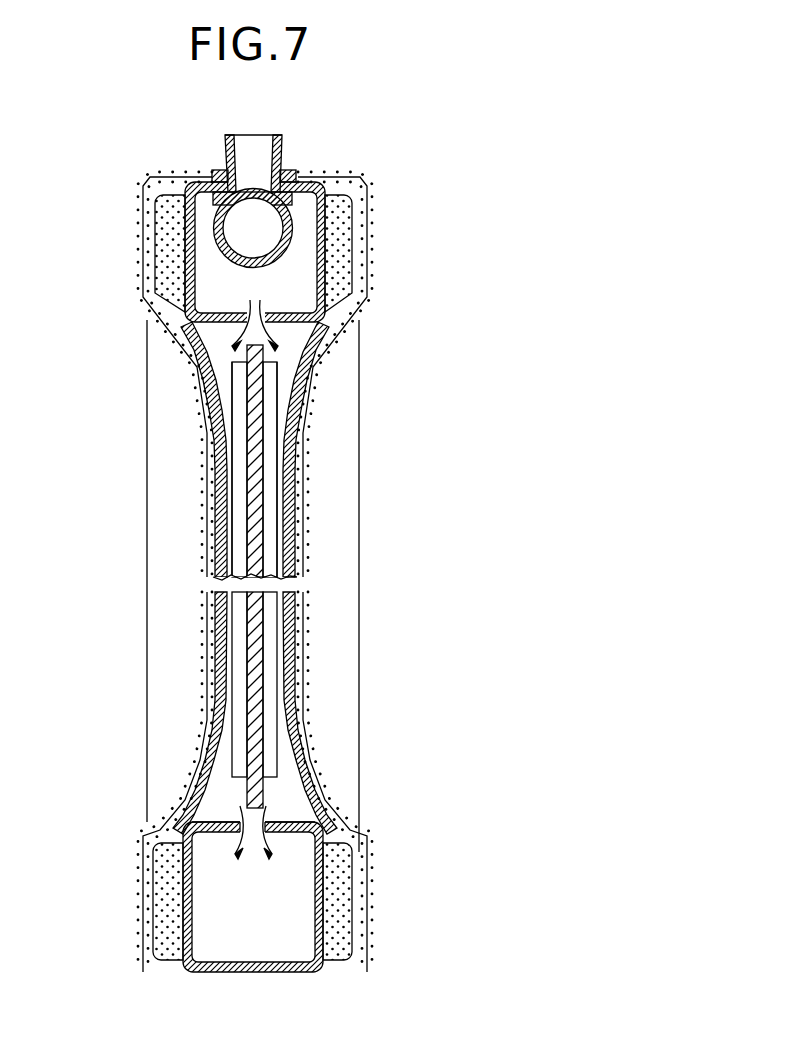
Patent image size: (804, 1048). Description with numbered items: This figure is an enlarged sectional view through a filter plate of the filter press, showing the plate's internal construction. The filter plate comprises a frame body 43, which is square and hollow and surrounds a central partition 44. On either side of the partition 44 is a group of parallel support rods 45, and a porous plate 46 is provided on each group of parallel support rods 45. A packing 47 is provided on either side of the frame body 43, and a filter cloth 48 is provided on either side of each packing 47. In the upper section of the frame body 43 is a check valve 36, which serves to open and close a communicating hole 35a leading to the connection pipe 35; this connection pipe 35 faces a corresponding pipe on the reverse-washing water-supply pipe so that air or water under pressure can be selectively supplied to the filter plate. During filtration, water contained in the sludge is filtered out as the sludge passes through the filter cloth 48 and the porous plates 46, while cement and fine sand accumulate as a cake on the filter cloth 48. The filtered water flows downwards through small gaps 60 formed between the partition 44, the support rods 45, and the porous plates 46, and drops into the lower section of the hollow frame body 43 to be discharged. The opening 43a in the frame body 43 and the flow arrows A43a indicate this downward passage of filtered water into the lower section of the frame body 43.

The connection pipe 35 is at (283, 142).
The communicating hole 35a is at (283, 170).
The check valve 36 is at (218, 243).
The frame body 43 is at (326, 232).
The header box opening 43a is at (265, 815).
The flow through opening A43a is at (278, 848).
The partition 44 is at (272, 372).
The parallel support rods 45 is at (258, 424).
The porous plate 46 is at (212, 535).
The packing 47 is at (345, 262).
The filter cloth 48 is at (365, 290).
The small gaps 60 is at (242, 468).